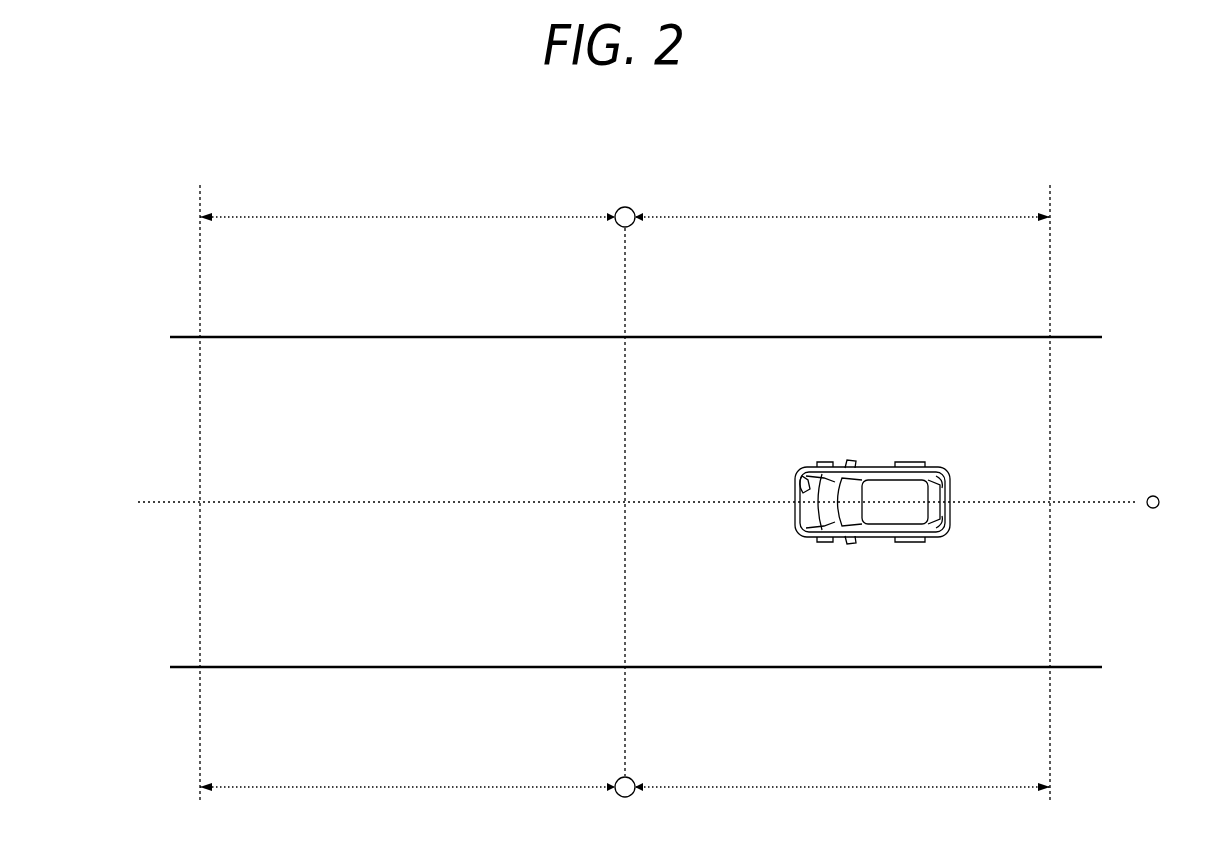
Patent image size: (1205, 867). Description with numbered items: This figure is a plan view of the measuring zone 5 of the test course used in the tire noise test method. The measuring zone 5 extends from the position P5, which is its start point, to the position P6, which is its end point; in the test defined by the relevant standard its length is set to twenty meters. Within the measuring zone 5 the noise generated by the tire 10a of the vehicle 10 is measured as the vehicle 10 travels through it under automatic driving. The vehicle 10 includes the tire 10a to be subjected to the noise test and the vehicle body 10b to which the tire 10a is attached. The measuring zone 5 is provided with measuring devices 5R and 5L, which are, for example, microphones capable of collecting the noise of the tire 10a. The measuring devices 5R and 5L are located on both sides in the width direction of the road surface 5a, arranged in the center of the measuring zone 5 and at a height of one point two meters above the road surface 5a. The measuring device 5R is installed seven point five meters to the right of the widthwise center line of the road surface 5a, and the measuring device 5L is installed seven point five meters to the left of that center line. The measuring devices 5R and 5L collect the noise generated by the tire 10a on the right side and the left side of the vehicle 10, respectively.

The measuring zone 5 is at (1099, 266).
The road surface 5a is at (892, 336).
The measuring device 5R is at (624, 206).
The measuring device 5L is at (623, 798).
The vehicle 10 is at (911, 428).
The tire 10a is at (836, 466).
The vehicle body 10b is at (799, 490).
The position P5 is at (1050, 479).
The position P6 is at (200, 479).